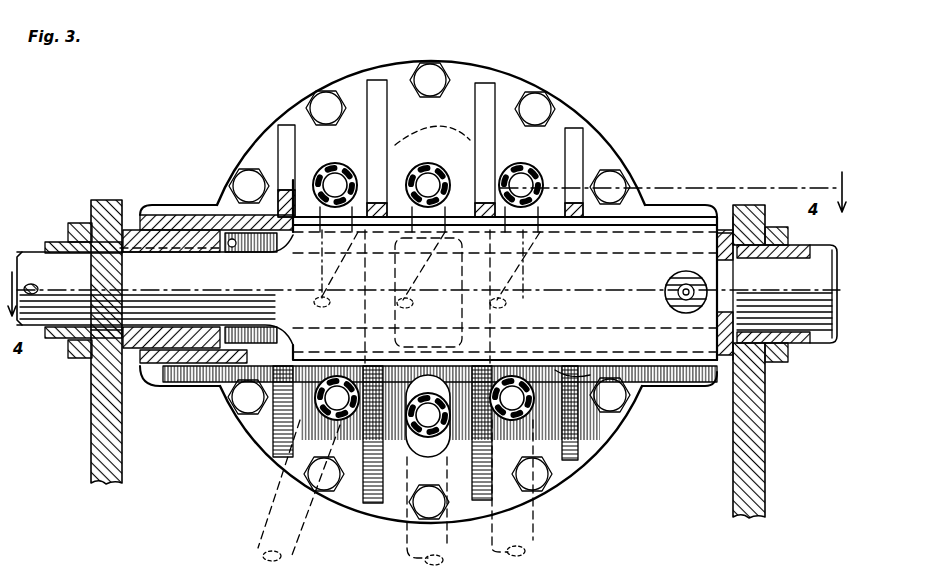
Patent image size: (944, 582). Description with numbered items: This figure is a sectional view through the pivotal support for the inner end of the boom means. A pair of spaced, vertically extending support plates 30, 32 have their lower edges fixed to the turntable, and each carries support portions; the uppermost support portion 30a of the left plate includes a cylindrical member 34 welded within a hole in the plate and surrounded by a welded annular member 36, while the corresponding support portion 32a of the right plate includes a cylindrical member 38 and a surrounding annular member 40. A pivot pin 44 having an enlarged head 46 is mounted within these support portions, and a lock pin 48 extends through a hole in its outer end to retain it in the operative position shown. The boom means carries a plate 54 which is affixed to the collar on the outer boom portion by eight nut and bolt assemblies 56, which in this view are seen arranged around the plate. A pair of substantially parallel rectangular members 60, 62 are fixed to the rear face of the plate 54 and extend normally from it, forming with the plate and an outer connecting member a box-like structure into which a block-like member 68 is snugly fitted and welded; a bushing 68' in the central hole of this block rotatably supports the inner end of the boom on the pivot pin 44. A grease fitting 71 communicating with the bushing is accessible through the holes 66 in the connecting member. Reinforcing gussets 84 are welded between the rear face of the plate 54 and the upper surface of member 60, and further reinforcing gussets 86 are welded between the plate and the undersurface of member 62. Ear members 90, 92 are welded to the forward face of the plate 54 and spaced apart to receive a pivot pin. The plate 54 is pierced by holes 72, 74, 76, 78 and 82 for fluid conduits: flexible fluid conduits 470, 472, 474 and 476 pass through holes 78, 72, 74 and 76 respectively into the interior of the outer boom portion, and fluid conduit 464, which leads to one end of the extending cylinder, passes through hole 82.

The support plate 30 is at (90, 450).
The support portion 30a is at (66, 372).
The support plate 32 is at (770, 463).
The support portion 32a is at (782, 365).
The cylindrical member 34 is at (70, 232).
The annular member 36 is at (78, 200).
The cylindrical member 38 is at (797, 246).
The annular member 40 is at (772, 228).
The pivot pin 44 is at (207, 284).
The enlarged head 46 is at (834, 344).
The lock pin 48 is at (38, 288).
The plate 54 is at (575, 97).
The nut and bolt assemblies 56 is at (245, 168).
The rectangular member 60 is at (178, 204).
The rectangular member 62 is at (175, 383).
The holes 66 is at (668, 298).
The block-like member 68 is at (251, 288).
The bushing 68' is at (171, 289).
The grease fitting 71 is at (678, 290).
The hole 72 is at (340, 170).
The hole 74 is at (420, 170).
The hole 76 is at (532, 175).
The hole 78 is at (355, 372).
The hole 82 is at (516, 376).
The reinforcing gussets 84 is at (286, 125).
The reinforcing gussets 86 is at (275, 440).
The ear member 90 is at (388, 138).
The ear member 92 is at (468, 140).
The fluid conduit 464 is at (556, 370).
The flexible fluid conduit 470 is at (325, 360).
The flexible fluid conduit 472 is at (318, 190).
The flexible fluid conduit 474 is at (440, 185).
The flexible fluid conduit 476 is at (512, 190).